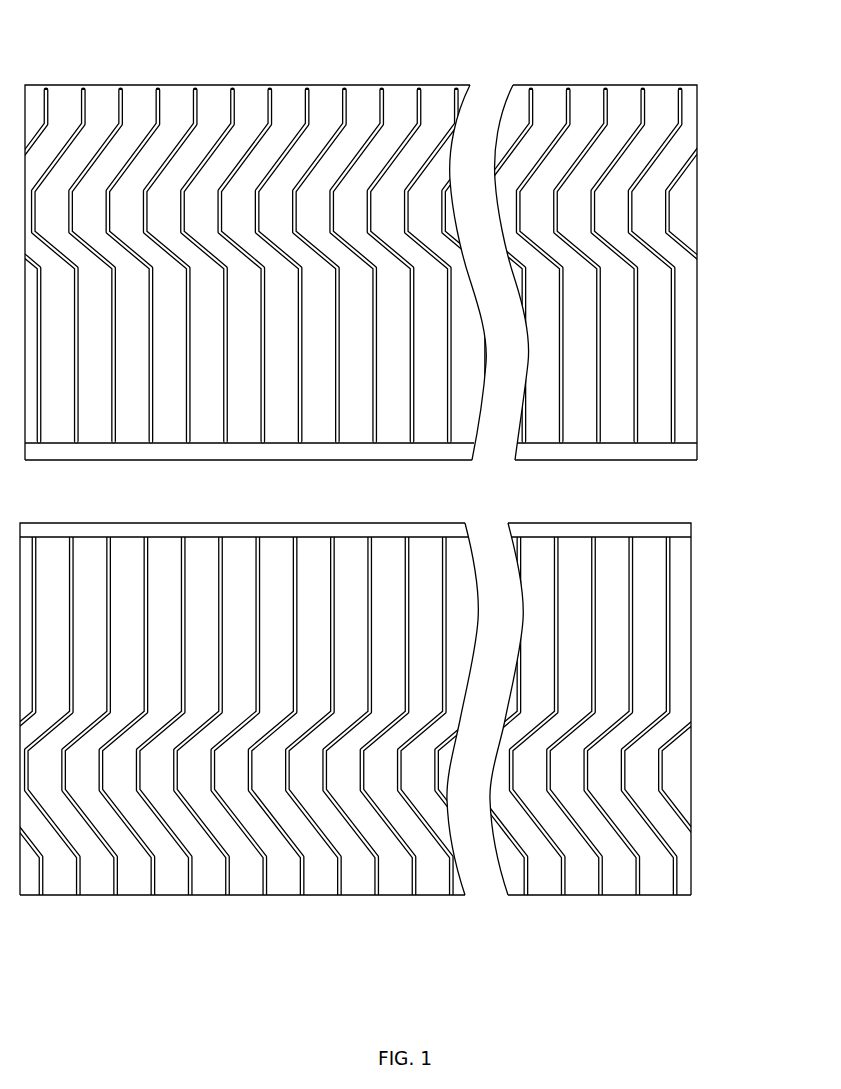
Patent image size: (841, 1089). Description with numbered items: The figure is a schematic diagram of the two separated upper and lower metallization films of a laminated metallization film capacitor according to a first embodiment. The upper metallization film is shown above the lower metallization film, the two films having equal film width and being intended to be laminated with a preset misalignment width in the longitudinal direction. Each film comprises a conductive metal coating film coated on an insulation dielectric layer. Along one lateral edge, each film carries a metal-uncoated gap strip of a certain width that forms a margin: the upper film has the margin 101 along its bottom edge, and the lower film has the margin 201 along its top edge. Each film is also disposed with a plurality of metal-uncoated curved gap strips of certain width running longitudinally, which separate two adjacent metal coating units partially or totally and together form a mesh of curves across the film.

The margin 101 is at (663, 450).
The margin 201 is at (628, 528).